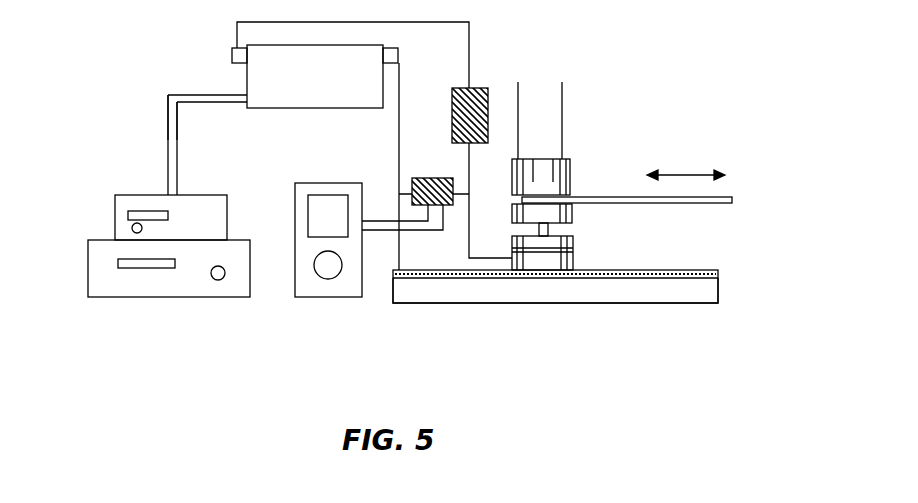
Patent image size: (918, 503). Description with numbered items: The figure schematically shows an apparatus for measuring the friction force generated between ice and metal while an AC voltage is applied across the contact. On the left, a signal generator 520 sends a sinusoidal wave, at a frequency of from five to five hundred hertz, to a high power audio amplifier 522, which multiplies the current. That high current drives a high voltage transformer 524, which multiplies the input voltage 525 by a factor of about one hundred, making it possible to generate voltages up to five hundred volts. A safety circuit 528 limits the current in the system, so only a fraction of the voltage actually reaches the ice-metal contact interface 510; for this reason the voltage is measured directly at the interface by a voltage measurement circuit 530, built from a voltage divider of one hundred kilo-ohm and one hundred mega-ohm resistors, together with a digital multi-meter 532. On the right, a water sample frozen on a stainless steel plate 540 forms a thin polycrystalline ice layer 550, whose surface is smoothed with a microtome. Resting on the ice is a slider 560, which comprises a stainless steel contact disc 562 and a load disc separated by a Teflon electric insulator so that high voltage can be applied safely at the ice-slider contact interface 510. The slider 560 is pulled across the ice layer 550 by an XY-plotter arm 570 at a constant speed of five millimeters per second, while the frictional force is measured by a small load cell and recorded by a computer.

The ice-solid metal contact interface 510 is at (579, 269).
The signal generator 520 is at (113, 203).
The high power audio amplifier 522 is at (92, 268).
The high voltage transformer 524 is at (255, 77).
The input voltage 525 is at (217, 103).
The safety circuit 528 is at (486, 88).
The voltage measurement circuit 530 is at (432, 178).
The digital multi-meter 532 is at (307, 287).
The stainless steel plate 540 is at (682, 303).
The ice layer 550 is at (713, 268).
The slider 560 is at (590, 176).
The stainless steel disk 562 is at (575, 252).
The XY-plotter arm 570 is at (727, 197).